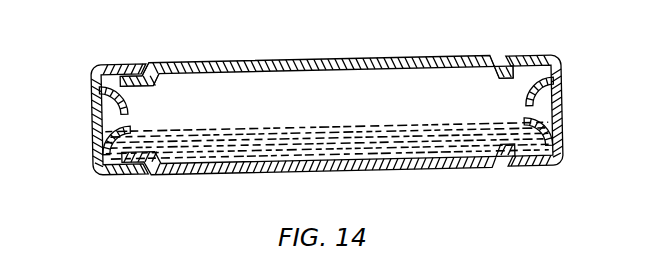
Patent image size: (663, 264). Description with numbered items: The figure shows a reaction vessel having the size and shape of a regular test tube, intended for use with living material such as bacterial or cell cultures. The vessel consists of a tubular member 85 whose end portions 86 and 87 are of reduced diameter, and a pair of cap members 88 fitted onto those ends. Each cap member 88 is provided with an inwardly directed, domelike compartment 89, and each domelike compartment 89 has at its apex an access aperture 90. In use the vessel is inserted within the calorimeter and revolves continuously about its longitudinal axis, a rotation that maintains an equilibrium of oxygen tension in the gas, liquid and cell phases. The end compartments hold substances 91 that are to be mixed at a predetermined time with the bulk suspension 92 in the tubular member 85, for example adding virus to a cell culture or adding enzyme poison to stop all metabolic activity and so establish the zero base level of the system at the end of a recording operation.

The tubular member 85 is at (266, 62).
The end portion of reduced diameter 86 is at (155, 80).
The end portion of reduced diameter 87 is at (496, 70).
The cap member 88 is at (97, 66).
The domelike compartment 89 is at (525, 120).
The access aperture 90 is at (130, 120).
The substance 91 is at (104, 137).
The bulk suspension 92 is at (405, 148).